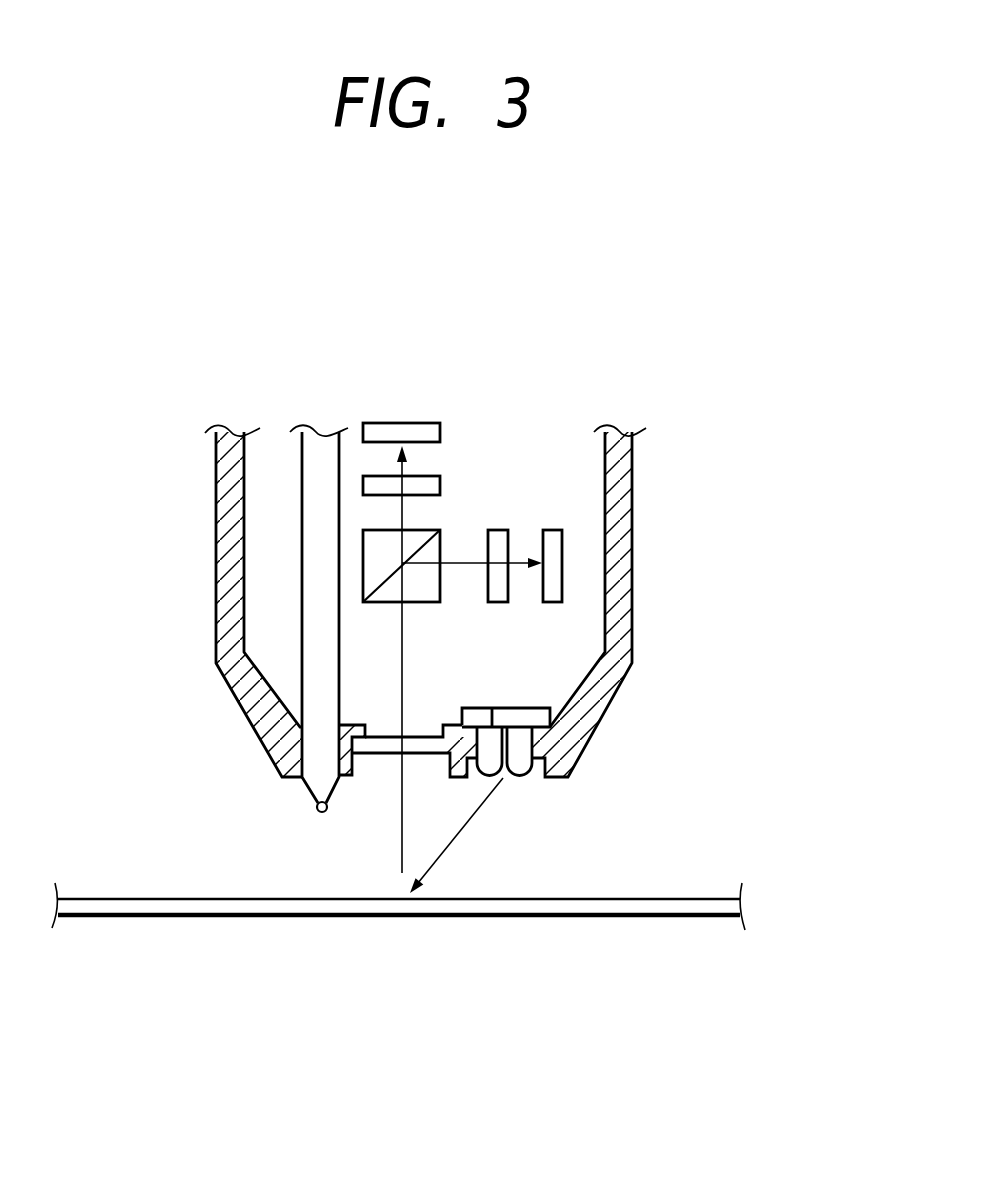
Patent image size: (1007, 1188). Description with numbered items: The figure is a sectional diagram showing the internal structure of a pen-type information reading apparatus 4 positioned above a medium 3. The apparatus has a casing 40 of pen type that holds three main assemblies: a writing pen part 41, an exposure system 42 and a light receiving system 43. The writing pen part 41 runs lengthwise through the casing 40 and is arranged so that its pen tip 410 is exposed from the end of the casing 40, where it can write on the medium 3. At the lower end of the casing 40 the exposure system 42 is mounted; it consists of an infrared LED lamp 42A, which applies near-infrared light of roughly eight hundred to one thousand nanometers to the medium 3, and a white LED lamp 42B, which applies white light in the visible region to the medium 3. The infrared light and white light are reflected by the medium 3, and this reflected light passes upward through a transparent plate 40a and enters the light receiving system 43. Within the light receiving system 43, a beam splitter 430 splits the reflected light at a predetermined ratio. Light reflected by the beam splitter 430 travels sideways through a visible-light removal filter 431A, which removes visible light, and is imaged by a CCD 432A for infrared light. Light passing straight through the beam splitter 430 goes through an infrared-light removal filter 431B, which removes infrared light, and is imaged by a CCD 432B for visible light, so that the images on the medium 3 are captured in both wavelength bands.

The medium 3 is at (200, 903).
The information reading apparatus 4 is at (246, 341).
The casing 40 is at (232, 575).
The transparent plate 40a is at (383, 745).
The writing pen part 41 is at (284, 660).
The pen tip 410 is at (315, 806).
The exposure system 42 is at (678, 790).
The infrared LED lamp 42A is at (509, 779).
The white LED lamp 42B is at (500, 775).
The light receiving system 43 is at (794, 302).
The beam splitter 430 is at (440, 540).
The visible-light removal filter 431A is at (507, 535).
The infrared-light removal filter 431B is at (440, 485).
The CCD for infrared light 432A is at (562, 535).
The CCD for visible light 432B is at (440, 432).